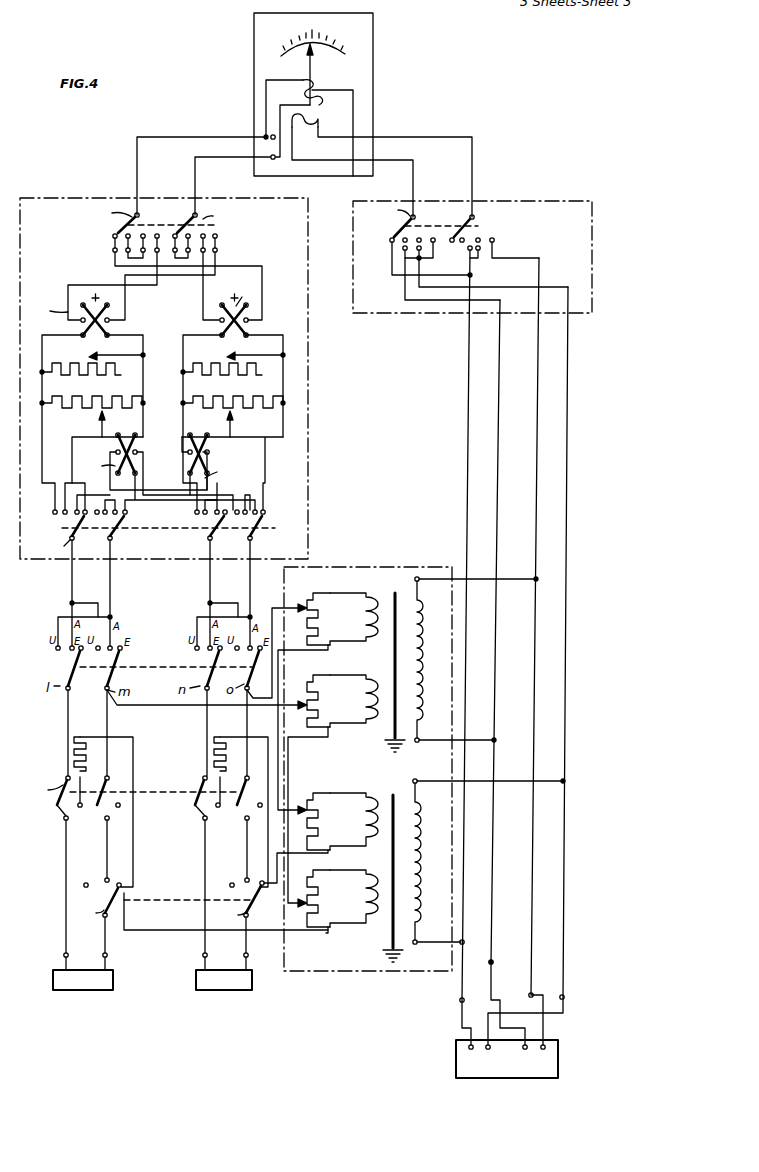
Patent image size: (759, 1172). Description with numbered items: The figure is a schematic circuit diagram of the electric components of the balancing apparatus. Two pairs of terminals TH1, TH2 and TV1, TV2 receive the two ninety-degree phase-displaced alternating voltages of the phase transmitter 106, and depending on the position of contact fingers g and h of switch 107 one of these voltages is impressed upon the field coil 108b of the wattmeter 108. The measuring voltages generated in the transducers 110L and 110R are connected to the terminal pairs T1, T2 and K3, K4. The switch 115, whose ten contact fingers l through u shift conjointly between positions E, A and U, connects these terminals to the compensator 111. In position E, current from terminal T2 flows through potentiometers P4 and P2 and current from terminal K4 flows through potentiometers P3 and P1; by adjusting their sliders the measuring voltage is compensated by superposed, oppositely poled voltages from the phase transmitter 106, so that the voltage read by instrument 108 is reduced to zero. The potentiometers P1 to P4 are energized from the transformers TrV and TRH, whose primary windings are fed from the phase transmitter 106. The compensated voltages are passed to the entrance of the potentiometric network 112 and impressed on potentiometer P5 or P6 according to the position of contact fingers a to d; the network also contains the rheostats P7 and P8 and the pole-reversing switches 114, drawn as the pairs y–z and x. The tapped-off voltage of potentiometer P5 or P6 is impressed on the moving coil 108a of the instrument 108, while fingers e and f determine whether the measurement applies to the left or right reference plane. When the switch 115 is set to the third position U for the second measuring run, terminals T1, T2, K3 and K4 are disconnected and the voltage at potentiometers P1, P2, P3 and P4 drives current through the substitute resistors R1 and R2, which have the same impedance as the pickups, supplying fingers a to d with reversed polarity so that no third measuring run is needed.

The wattmeter 108 is at (376, 47).
The moving coil 108a is at (303, 82).
The field coil 108b is at (292, 118).
The potentiometric network 112 is at (82, 201).
The pole-reversing switches 114 is at (145, 309).
The switch 107 is at (594, 214).
The switch 115 is at (181, 821).
The compensator 111 is at (350, 968).
The transducer 110L is at (90, 984).
The transducer 110R is at (220, 984).
The phase transmitter 106 is at (496, 1070).
The potentiometer P1 is at (329, 601).
The potentiometer P2 is at (318, 690).
The potentiometer P3 is at (318, 803).
The potentiometer P4 is at (320, 883).
The potentiometer P5 is at (80, 398).
The potentiometer P6 is at (246, 398).
The rheostat P7 is at (69, 368).
The rheostat P8 is at (209, 368).
The substitute resistor R1 is at (74, 750).
The substitute resistor R2 is at (214, 761).
The transformer TrV is at (410, 566).
The transformer TRH is at (401, 792).
The terminal T1 is at (63, 955).
The terminal T2 is at (108, 955).
The terminal K3 is at (202, 955).
The terminal K4 is at (249, 955).
The terminal TV1 is at (493, 960).
The terminal TV2 is at (527, 990).
The terminal TH1 is at (460, 1001).
The terminal TH2 is at (565, 997).